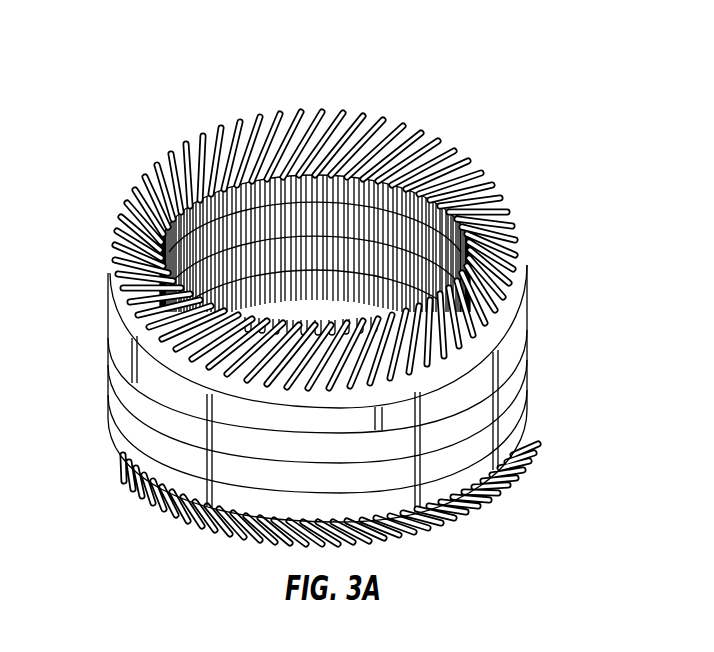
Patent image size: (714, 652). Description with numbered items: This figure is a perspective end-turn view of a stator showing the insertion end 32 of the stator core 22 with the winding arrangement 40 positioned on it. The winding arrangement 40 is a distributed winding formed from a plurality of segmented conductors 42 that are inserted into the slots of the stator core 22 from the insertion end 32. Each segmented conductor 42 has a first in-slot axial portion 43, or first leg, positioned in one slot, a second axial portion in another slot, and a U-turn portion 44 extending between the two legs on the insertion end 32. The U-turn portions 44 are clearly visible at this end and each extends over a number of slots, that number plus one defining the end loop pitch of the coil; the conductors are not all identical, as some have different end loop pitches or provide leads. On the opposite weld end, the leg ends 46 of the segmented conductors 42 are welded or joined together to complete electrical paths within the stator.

The winding arrangement 40 is at (331, 275).
The stator core 22 is at (500, 412).
The insertion end 32 is at (517, 248).
The segmented conductors 42 is at (135, 208).
The first in-slot/axial portion 43 is at (270, 190).
The U-turn portion 44 is at (157, 192).
The leg ends 46 is at (160, 512).